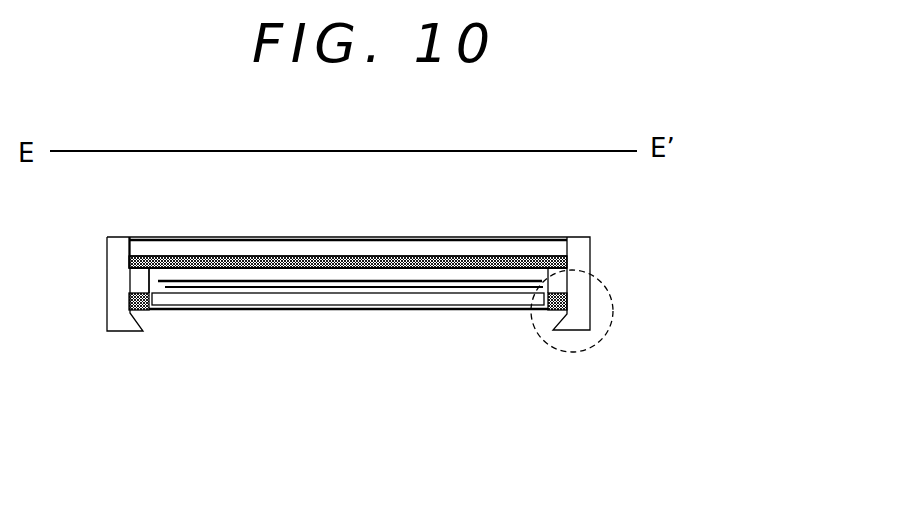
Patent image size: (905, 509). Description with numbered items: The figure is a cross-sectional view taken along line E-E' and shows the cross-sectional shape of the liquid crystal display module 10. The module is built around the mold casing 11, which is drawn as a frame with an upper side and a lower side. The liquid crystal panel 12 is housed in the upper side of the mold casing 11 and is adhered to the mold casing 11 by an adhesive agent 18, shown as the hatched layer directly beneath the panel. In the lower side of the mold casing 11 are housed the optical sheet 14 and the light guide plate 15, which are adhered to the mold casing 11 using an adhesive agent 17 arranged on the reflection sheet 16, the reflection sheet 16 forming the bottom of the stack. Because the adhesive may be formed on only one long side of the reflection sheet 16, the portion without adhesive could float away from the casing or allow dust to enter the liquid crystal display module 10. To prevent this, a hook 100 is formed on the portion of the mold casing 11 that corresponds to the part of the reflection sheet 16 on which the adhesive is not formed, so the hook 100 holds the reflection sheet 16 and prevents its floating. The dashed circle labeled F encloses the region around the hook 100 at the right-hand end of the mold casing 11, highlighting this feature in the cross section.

The liquid crystal display module 10 is at (657, 213).
The mold casing 11 is at (578, 262).
The liquid crystal panel 12 is at (503, 245).
The optical sheet 14 is at (148, 285).
The light guide plate 15 is at (263, 300).
The reflection sheet 16 is at (382, 312).
The adhesive agent 17 is at (142, 313).
The adhesive agent 18 is at (255, 256).
The hook 100 is at (570, 330).
The enlarged region F is at (540, 342).